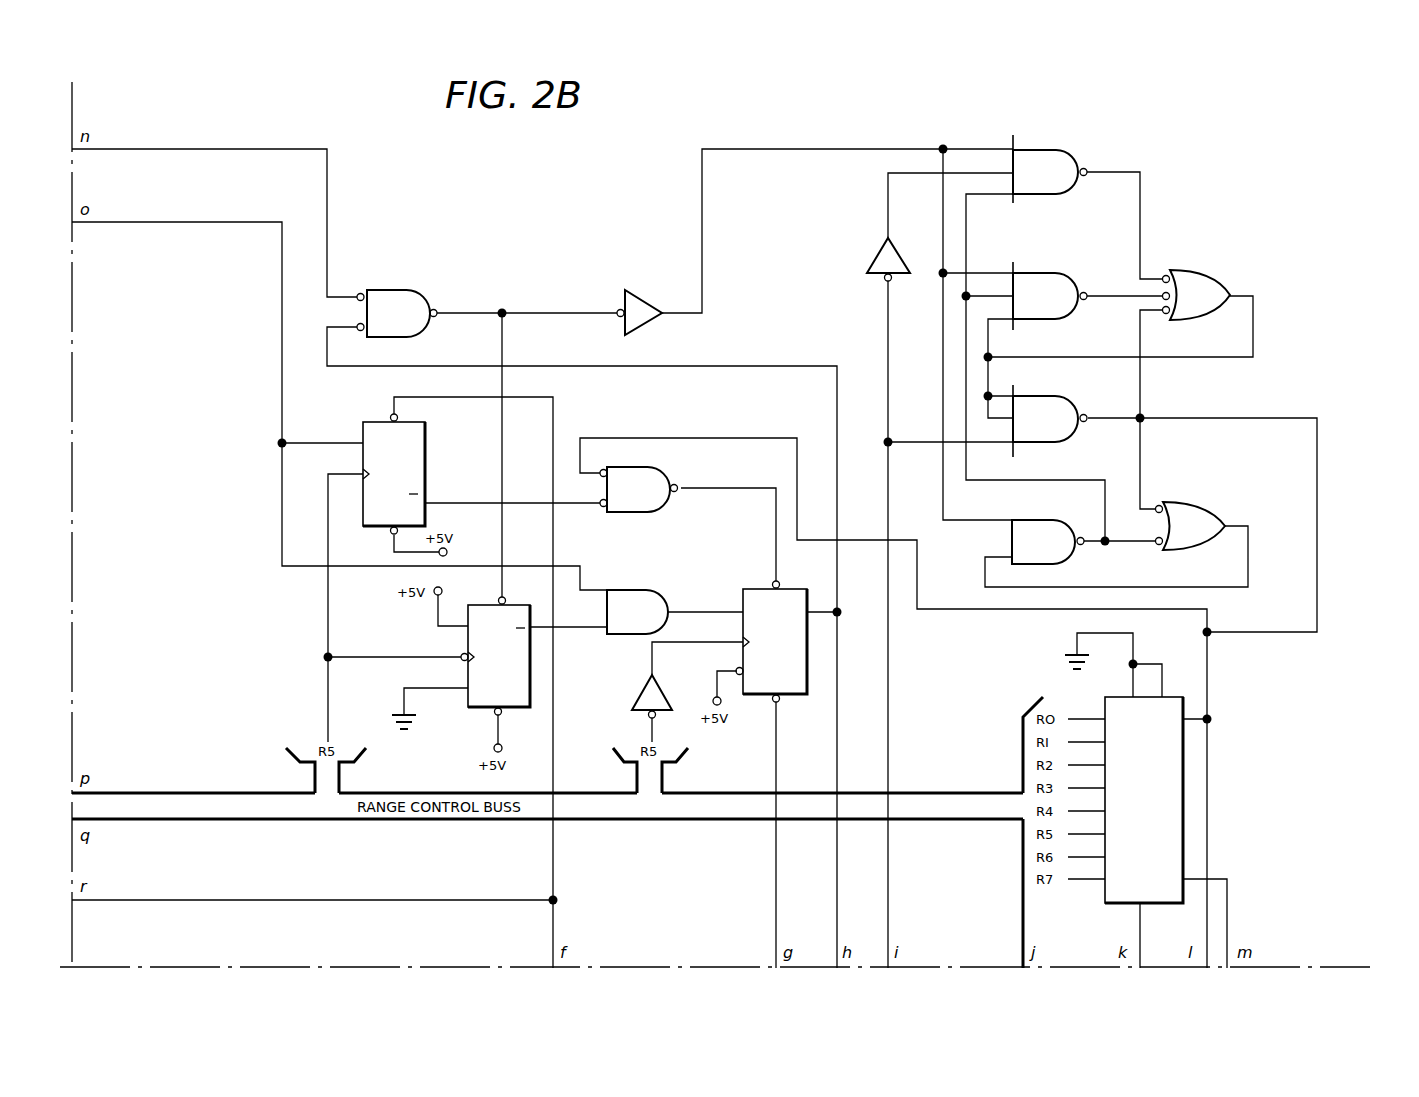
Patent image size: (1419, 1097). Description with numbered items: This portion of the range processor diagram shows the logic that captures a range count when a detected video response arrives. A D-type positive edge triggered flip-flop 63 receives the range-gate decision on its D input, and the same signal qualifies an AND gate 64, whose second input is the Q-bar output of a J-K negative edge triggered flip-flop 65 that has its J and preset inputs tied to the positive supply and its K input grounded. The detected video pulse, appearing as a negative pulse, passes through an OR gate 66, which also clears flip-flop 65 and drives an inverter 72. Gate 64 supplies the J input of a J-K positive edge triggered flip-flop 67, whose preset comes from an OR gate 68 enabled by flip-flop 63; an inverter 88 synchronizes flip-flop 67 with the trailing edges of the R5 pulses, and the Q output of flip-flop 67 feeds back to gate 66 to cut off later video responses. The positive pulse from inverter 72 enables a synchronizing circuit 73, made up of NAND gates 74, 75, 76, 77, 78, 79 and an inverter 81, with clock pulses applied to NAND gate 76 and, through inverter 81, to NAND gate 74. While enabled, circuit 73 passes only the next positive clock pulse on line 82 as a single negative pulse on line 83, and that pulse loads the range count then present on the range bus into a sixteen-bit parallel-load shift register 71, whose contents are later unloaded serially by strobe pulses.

The D-type positive edge triggered flip-flop 63 is at (363, 420).
The AND gate 64 is at (648, 591).
The J-K negative edge triggered flip-flop 65 is at (476, 708).
The OR gate 66 is at (418, 288).
The J-K type positive edge triggered flip-flop 67 is at (786, 697).
The OR gate 68 is at (660, 470).
The parallel-load shift register 71 is at (1234, 865).
The inverter 72 is at (638, 292).
The synchronizing circuit 73 is at (1134, 338).
The NAND gate 74 is at (1058, 150).
The NAND gate 75 is at (1058, 272).
The NAND gate 76 is at (1060, 396).
The NAND gate 77 is at (1058, 520).
The NAND gate 78 is at (1213, 272).
The NAND gate 79 is at (1210, 507).
The inverter 81 is at (866, 602).
The line 82 is at (890, 692).
The line 83 is at (1318, 540).
The inverter 88 is at (636, 694).